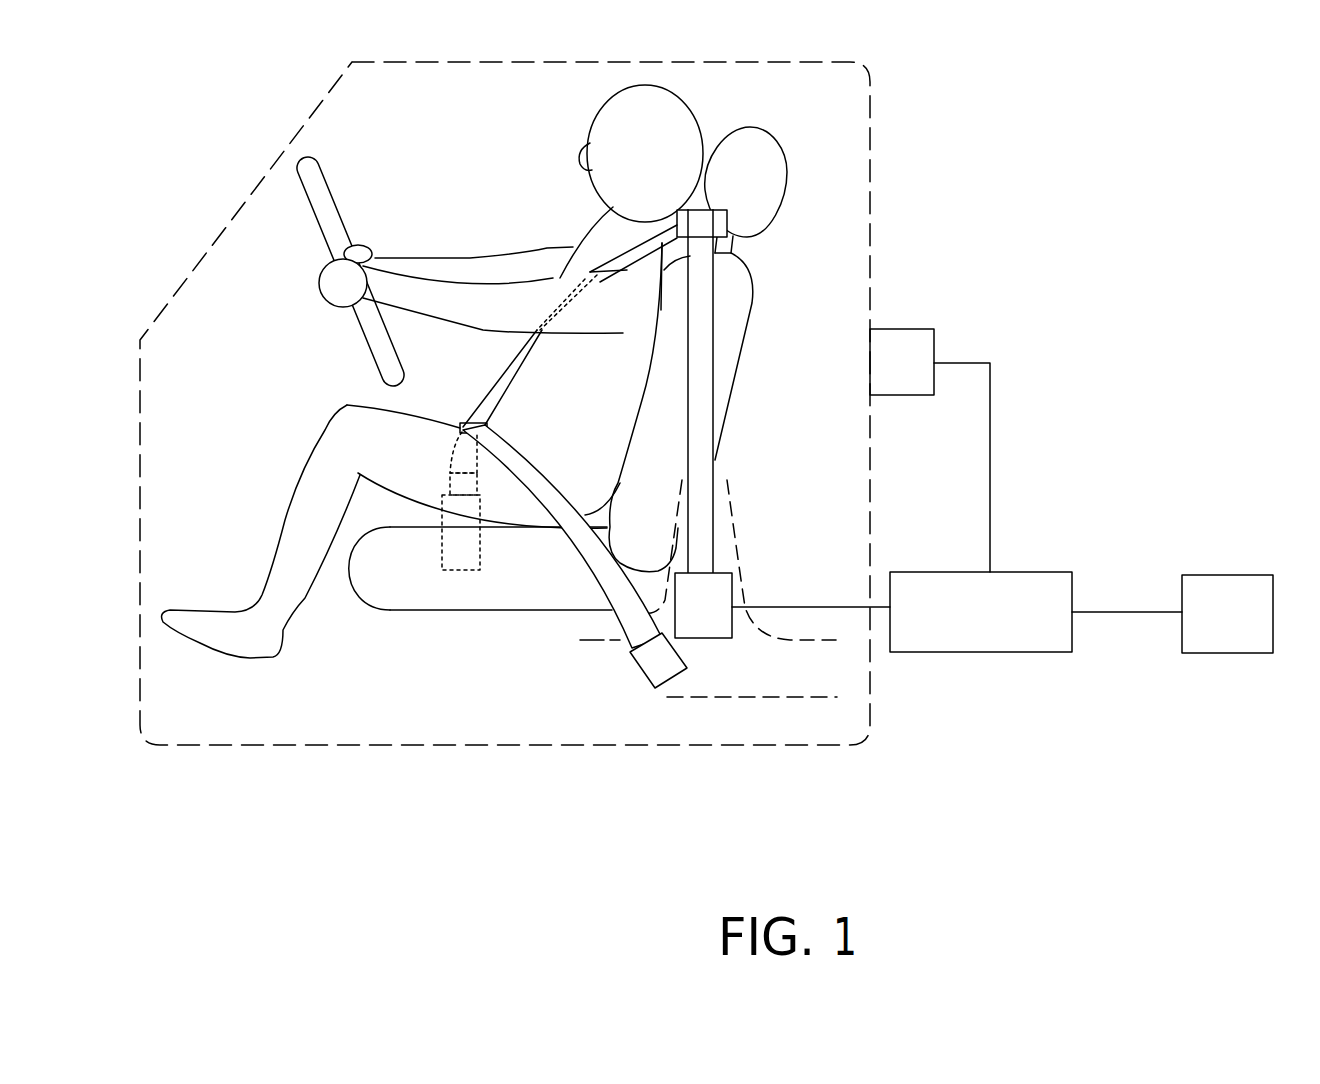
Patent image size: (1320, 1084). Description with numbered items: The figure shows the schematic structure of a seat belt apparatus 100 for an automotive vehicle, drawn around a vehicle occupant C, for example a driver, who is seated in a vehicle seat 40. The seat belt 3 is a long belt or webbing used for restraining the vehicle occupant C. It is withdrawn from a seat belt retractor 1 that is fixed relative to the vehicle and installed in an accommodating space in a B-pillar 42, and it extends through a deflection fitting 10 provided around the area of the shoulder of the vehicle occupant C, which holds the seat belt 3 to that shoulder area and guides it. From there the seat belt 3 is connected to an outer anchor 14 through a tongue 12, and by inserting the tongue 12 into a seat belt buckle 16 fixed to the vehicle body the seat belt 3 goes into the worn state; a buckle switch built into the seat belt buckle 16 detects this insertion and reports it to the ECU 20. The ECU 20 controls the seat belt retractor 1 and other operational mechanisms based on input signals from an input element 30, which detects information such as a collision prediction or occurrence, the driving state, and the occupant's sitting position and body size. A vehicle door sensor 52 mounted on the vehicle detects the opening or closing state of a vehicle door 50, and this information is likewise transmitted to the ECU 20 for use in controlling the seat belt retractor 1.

The seat belt retractor 1 is at (709, 641).
The seat belt 3 is at (716, 464).
The deflection fitting 10 is at (727, 210).
The tongue 12 is at (447, 480).
The outer anchor 14 is at (657, 657).
The seat belt buckle 16 is at (467, 553).
The ECU 20 is at (1023, 569).
The input element 30 is at (1209, 571).
The vehicle seat 40 is at (749, 316).
The B-pillar 42 is at (737, 542).
The vehicle door 50 is at (872, 144).
The vehicle door sensor 52 is at (893, 345).
The seat belt apparatus 100 is at (1021, 282).
The vehicle occupant C is at (542, 247).